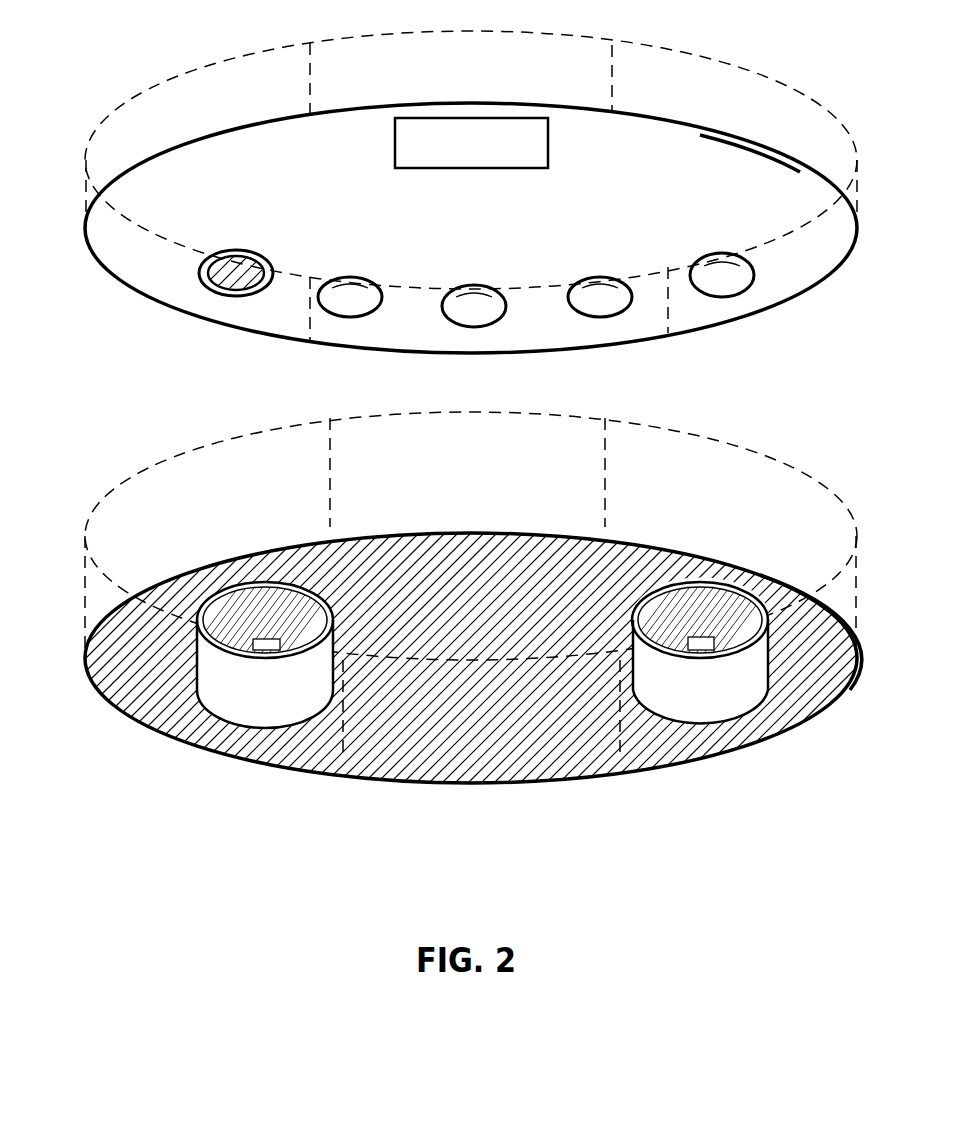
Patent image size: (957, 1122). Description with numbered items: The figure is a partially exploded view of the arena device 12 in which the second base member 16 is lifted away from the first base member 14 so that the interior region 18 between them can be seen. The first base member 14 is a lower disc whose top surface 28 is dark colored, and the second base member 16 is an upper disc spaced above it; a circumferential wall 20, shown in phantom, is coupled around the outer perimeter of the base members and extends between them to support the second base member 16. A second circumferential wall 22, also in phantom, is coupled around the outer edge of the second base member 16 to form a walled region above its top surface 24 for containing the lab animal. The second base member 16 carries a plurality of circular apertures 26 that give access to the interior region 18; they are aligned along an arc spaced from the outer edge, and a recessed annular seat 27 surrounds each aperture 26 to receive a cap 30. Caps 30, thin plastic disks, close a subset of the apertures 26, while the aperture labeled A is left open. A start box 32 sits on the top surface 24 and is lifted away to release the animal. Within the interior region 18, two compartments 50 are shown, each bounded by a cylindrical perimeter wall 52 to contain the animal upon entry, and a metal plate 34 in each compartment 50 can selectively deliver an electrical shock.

The arena device 12 is at (70, 84).
The first base member 14 is at (814, 716).
The second base member 16 is at (668, 122).
The interior region 18 is at (822, 626).
The circumferential wall 20 is at (262, 428).
The circumferential wall 22 is at (90, 184).
The top surface 24 is at (752, 165).
The apertures 26 is at (272, 296).
The recessed annular seat 27 is at (204, 286).
The top surface 28 is at (514, 764).
The caps 30 is at (358, 290).
The start box 32 is at (548, 143).
The metal plate 34 is at (266, 652).
The compartments 50 is at (230, 724).
The perimeter wall 52 is at (214, 690).